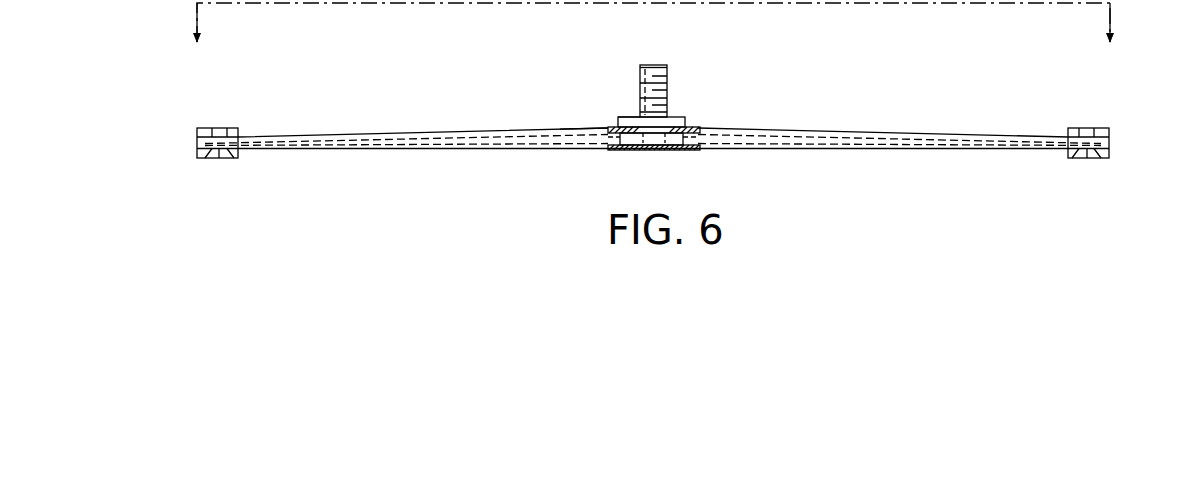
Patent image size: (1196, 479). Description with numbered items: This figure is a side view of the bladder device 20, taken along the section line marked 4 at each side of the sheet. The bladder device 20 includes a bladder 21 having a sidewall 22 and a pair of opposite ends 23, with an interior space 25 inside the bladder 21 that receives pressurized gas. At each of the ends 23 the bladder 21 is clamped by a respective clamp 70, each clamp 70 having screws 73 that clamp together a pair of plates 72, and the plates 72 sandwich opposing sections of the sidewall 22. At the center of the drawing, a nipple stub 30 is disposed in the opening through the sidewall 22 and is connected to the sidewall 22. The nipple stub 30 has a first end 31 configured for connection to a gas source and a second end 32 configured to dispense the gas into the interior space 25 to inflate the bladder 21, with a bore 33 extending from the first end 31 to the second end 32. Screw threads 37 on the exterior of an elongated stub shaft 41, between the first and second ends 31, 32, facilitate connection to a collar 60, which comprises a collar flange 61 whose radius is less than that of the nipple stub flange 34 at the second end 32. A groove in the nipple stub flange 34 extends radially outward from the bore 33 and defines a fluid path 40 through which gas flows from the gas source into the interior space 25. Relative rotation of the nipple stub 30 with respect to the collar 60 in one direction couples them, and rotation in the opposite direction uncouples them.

The section line 4- 4 is at (654, 26).
The bladder device 20 is at (553, 57).
The bladder 21 is at (472, 130).
The sidewall 22 is at (765, 130).
The opposite ends 23 is at (215, 117).
The interior space 25 is at (595, 137).
The nipple stub 30 is at (667, 80).
The first end 31 is at (640, 71).
The second end 32 is at (625, 146).
The bore 33 is at (667, 50).
The nipple stub flange 34 is at (688, 140).
The screw threads 37 is at (640, 97).
The fluid path 40 is at (674, 136).
The elongated stub shaft 41 is at (667, 98).
The collar 60 is at (668, 117).
The collar flange 61 is at (627, 117).
The clamps 70 is at (208, 168).
The plates 72 is at (200, 154).
The screws 73 is at (217, 160).